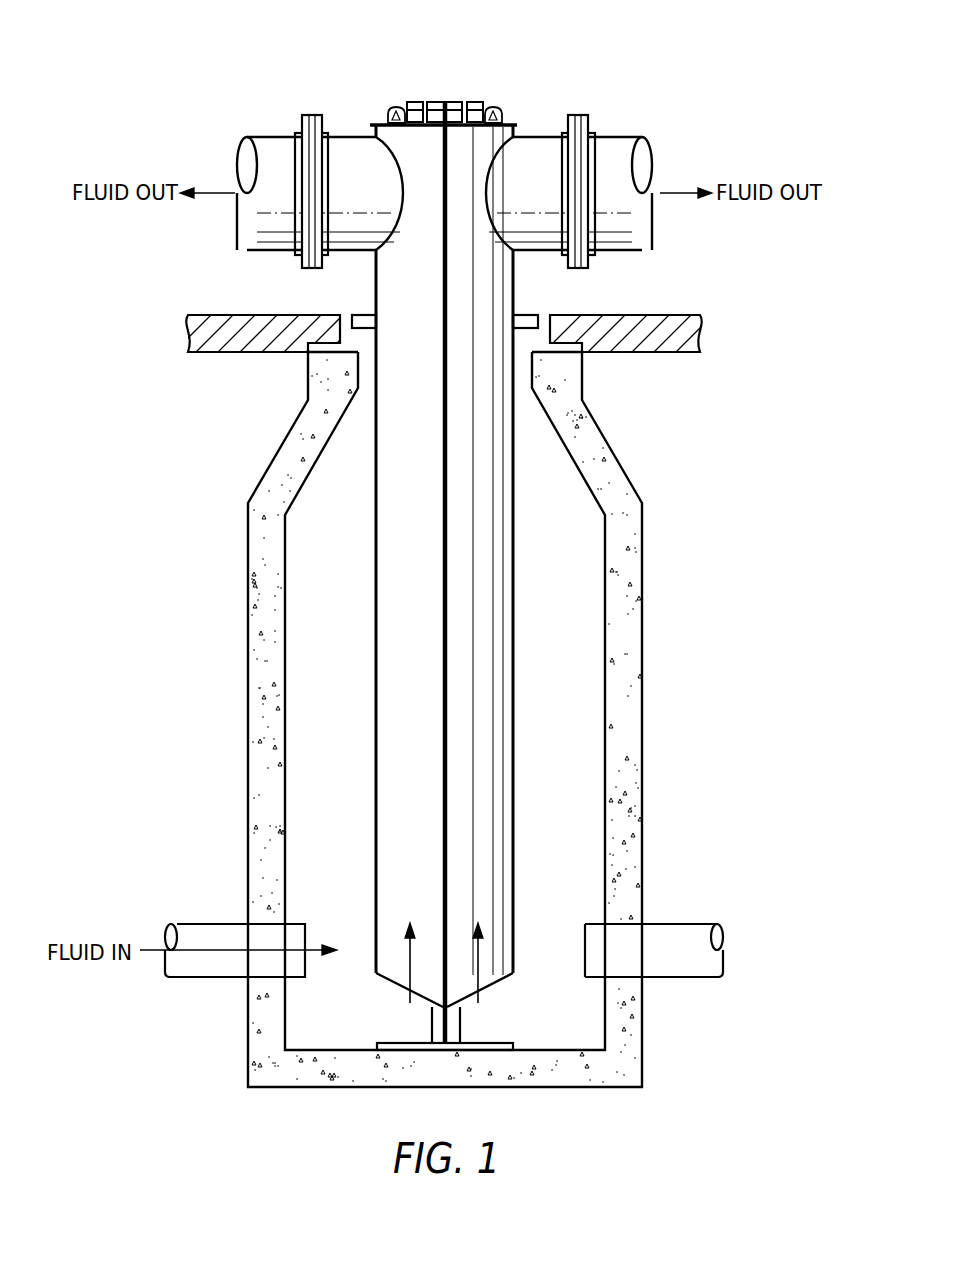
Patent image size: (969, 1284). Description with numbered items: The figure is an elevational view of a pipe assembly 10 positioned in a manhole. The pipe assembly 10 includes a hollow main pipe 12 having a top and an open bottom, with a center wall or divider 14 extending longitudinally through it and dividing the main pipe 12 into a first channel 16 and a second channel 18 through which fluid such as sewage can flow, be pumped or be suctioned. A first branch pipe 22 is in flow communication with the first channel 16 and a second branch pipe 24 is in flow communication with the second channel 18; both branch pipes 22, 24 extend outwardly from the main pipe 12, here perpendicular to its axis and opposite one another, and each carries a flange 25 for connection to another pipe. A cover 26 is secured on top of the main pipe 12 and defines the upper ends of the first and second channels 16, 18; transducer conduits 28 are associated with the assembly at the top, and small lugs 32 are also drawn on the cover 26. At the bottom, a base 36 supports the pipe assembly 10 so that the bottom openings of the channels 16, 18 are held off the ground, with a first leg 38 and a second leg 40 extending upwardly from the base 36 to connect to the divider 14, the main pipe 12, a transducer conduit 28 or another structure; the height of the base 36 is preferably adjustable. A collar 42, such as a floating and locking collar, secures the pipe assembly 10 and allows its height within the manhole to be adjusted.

The pipe assembly 10 is at (650, 86).
The main pipe 12 is at (483, 495).
The divider 14 is at (445, 729).
The first channel 16 is at (418, 608).
The second channel 18 is at (500, 608).
The first branch pipe 22 is at (351, 137).
The second branch pipe 24 is at (543, 137).
The flange 25 is at (312, 114).
The cover 26 is at (516, 123).
The transducer conduit 28 is at (428, 102).
The lifting lugs 32 is at (396, 106).
The base 36 is at (492, 1047).
The first leg 38 is at (433, 1022).
The second leg 40 is at (433, 1022).
The collar 42 is at (525, 315).